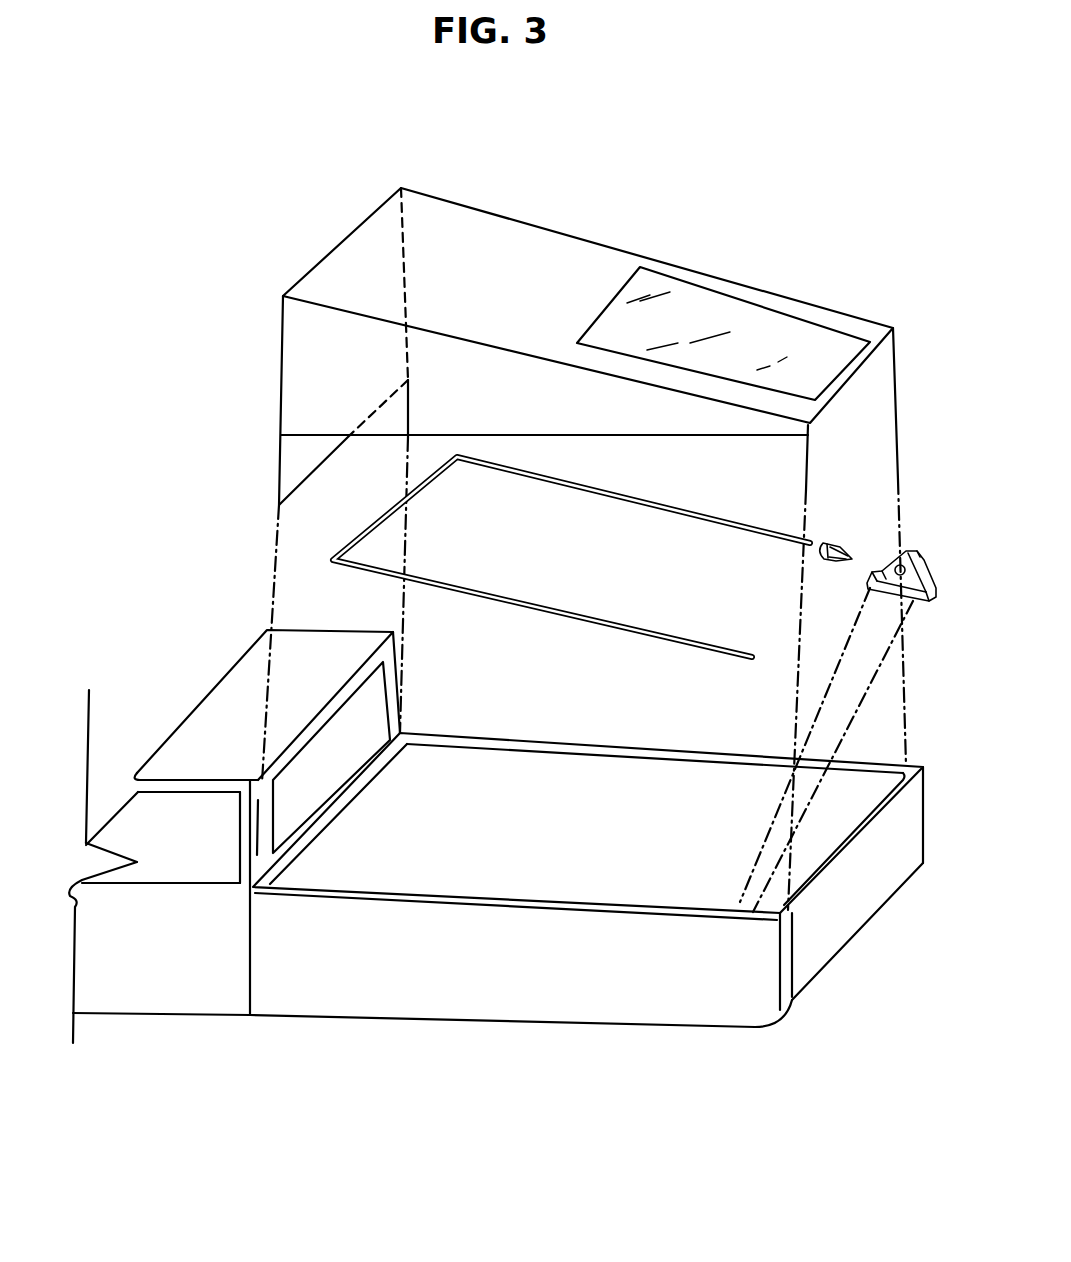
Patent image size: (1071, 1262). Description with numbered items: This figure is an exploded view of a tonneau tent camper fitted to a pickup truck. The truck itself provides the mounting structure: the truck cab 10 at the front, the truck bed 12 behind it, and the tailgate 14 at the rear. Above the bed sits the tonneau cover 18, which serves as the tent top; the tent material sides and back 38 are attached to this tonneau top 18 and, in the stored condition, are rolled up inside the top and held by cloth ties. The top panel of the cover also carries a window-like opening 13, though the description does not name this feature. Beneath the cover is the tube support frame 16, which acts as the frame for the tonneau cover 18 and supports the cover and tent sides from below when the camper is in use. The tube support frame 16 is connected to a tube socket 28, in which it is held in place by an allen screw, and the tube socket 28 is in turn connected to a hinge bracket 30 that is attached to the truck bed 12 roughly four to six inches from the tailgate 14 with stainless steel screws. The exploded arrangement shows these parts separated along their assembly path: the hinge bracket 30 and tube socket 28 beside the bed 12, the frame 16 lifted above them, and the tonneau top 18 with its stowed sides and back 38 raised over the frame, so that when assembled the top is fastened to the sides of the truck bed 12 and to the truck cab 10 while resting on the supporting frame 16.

The truck cab 10 is at (223, 788).
The truck bed 12 is at (618, 1010).
The display window 13 is at (735, 353).
The tailgate 14 is at (837, 925).
The tube support frame 16 is at (502, 458).
The tonneau cover 18 is at (637, 257).
The tube socket 28 is at (843, 545).
The hinge bracket 30 is at (905, 555).
The tent material sides and back 38 is at (600, 529).